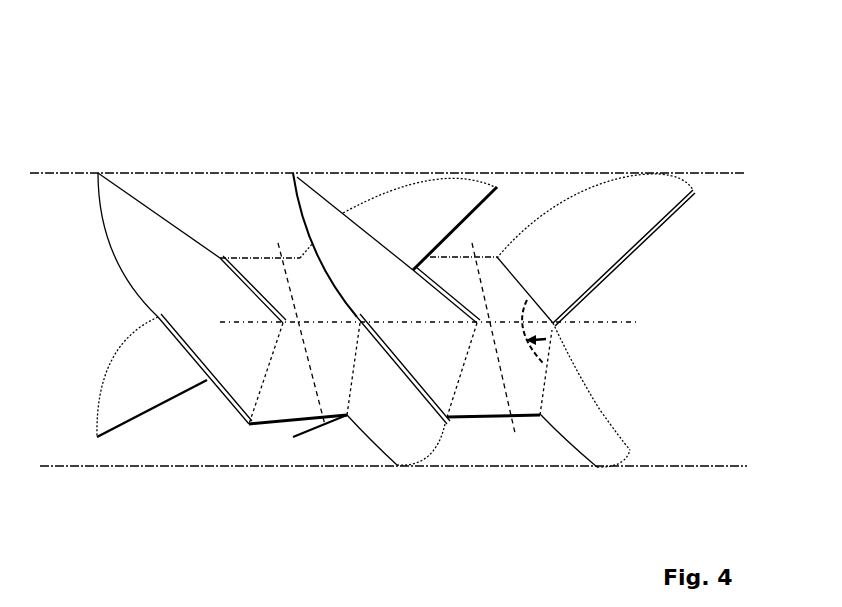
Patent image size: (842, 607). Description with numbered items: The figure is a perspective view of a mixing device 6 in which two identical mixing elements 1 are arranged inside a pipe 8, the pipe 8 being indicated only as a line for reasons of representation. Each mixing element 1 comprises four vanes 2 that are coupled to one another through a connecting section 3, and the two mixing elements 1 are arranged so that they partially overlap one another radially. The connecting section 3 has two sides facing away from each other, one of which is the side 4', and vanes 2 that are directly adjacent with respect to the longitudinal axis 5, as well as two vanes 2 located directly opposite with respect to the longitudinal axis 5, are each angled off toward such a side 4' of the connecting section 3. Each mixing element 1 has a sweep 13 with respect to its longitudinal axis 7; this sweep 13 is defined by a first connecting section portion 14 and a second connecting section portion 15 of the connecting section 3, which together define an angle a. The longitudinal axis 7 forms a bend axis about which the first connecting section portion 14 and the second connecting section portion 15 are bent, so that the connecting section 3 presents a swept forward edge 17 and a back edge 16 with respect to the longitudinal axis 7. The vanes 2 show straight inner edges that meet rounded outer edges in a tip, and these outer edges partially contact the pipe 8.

The mixing element 1 is at (250, 237).
The vane 2 is at (190, 299).
The connecting section 3 is at (250, 275).
The side of the connecting section 4' is at (386, 334).
The longitudinal axis 5 is at (325, 433).
The mixing device 6 is at (145, 134).
The longitudinal axis 7 is at (610, 323).
The pipe 8 is at (383, 173).
The sweep 13 is at (530, 357).
The first connecting section portion 14 is at (497, 280).
The second connecting section portion 15 is at (465, 415).
The back edge 16 is at (553, 323).
The swept forward edge 17 is at (432, 277).
The angle a is at (528, 293).